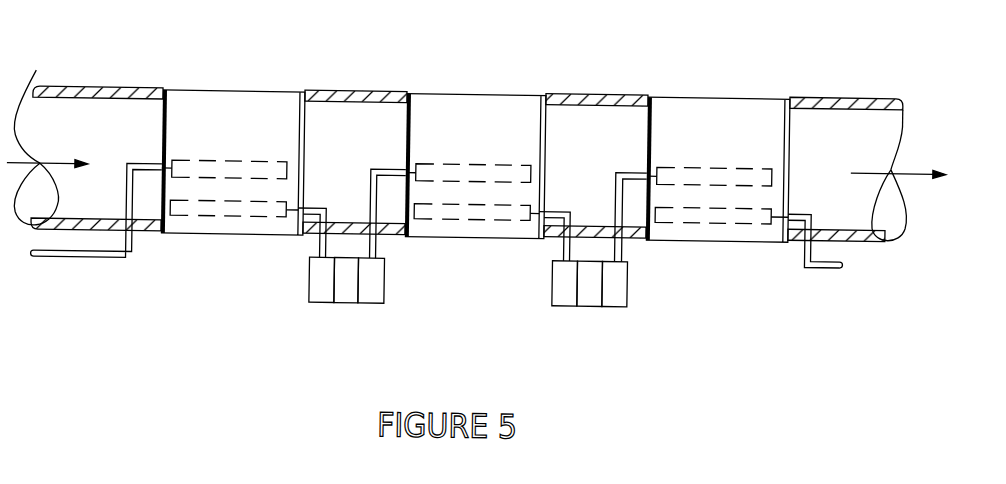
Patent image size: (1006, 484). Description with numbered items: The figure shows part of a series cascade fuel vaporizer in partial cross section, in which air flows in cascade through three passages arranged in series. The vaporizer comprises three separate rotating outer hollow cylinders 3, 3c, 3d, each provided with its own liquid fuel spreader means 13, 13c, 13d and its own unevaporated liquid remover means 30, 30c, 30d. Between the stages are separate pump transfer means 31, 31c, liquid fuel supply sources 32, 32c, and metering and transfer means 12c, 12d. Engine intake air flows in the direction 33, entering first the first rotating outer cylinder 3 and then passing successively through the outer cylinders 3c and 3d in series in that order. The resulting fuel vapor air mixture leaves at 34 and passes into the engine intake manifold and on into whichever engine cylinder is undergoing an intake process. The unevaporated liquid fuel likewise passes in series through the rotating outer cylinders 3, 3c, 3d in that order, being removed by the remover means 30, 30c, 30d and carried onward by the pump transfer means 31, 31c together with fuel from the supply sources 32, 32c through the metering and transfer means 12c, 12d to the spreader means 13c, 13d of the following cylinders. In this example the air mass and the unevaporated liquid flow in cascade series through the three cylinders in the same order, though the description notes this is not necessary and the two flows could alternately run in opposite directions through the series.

The rotating outer hollow cylinder 3 is at (242, 158).
The rotating outer hollow cylinder 3c is at (489, 163).
The rotating outer hollow cylinder 3d is at (749, 166).
The liquid fuel spreader means 13 is at (208, 166).
The liquid fuel spreader means 13c is at (470, 168).
The liquid fuel spreader means 13d is at (724, 166).
The unevaporated liquid remover means 30 is at (222, 210).
The unevaporated liquid remover means 30c is at (494, 209).
The unevaporated liquid remover means 30d is at (735, 210).
The pump transfer means 31 is at (325, 294).
The pump transfer means 31c is at (570, 296).
The liquid fuel supply source 32 is at (343, 297).
The liquid fuel supply source 32c is at (596, 297).
The metering and transfer means 12c is at (373, 296).
The metering and transfer means 12d is at (616, 297).
The engine intake air flow direction 33 is at (36, 72).
The fuel vapor air mixture outlet 34 is at (907, 162).